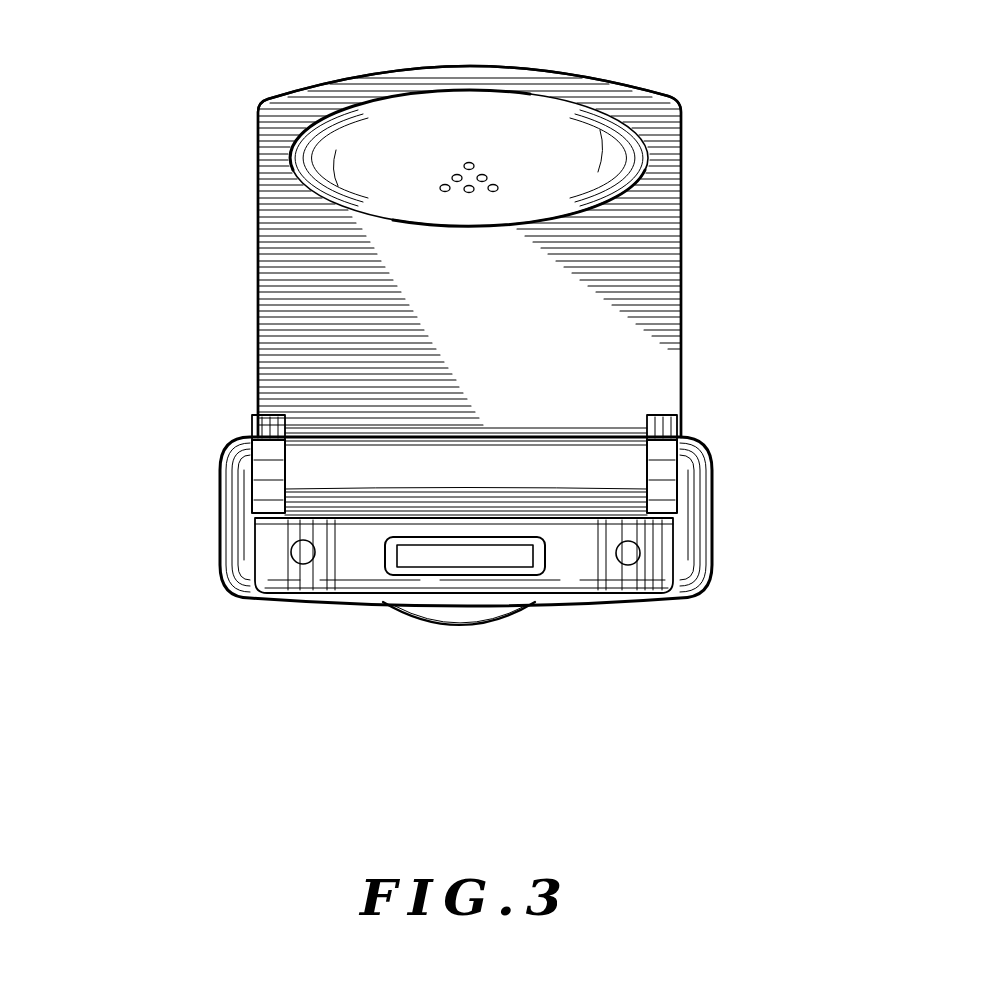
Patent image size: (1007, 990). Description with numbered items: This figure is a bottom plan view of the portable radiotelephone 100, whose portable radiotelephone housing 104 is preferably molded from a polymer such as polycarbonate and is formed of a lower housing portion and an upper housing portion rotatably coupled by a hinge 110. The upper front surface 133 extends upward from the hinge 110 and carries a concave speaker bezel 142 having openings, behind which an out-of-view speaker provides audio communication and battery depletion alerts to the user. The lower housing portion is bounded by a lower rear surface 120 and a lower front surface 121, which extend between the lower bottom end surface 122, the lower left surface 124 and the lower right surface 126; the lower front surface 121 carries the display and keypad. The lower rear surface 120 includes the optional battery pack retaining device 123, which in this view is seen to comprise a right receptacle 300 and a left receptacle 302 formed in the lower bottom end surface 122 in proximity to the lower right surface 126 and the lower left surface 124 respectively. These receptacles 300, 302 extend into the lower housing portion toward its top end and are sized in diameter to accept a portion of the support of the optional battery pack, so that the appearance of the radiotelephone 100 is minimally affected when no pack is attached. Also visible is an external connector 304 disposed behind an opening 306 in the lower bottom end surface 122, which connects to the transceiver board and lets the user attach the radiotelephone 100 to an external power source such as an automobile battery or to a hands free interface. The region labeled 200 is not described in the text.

The portable radiotelephone 100 is at (182, 199).
The portable radiotelephone housing 104 is at (258, 107).
The hinge 110 is at (262, 415).
The lower rear surface 120 is at (338, 605).
The lower front surface 121 is at (277, 505).
The lower bottom end surface 122 is at (352, 562).
The optional battery pack retaining device 123 is at (603, 702).
The lower left surface 124 is at (232, 548).
The lower right surface 126 is at (680, 540).
The upper front surface 133 is at (645, 252).
The concave speaker bezel 142 is at (556, 117).
The lower bump portion 200 is at (473, 652).
The right receptacle 300 is at (645, 575).
The left receptacle 302 is at (292, 560).
The external connector 304 is at (512, 567).
The opening 306 is at (545, 570).